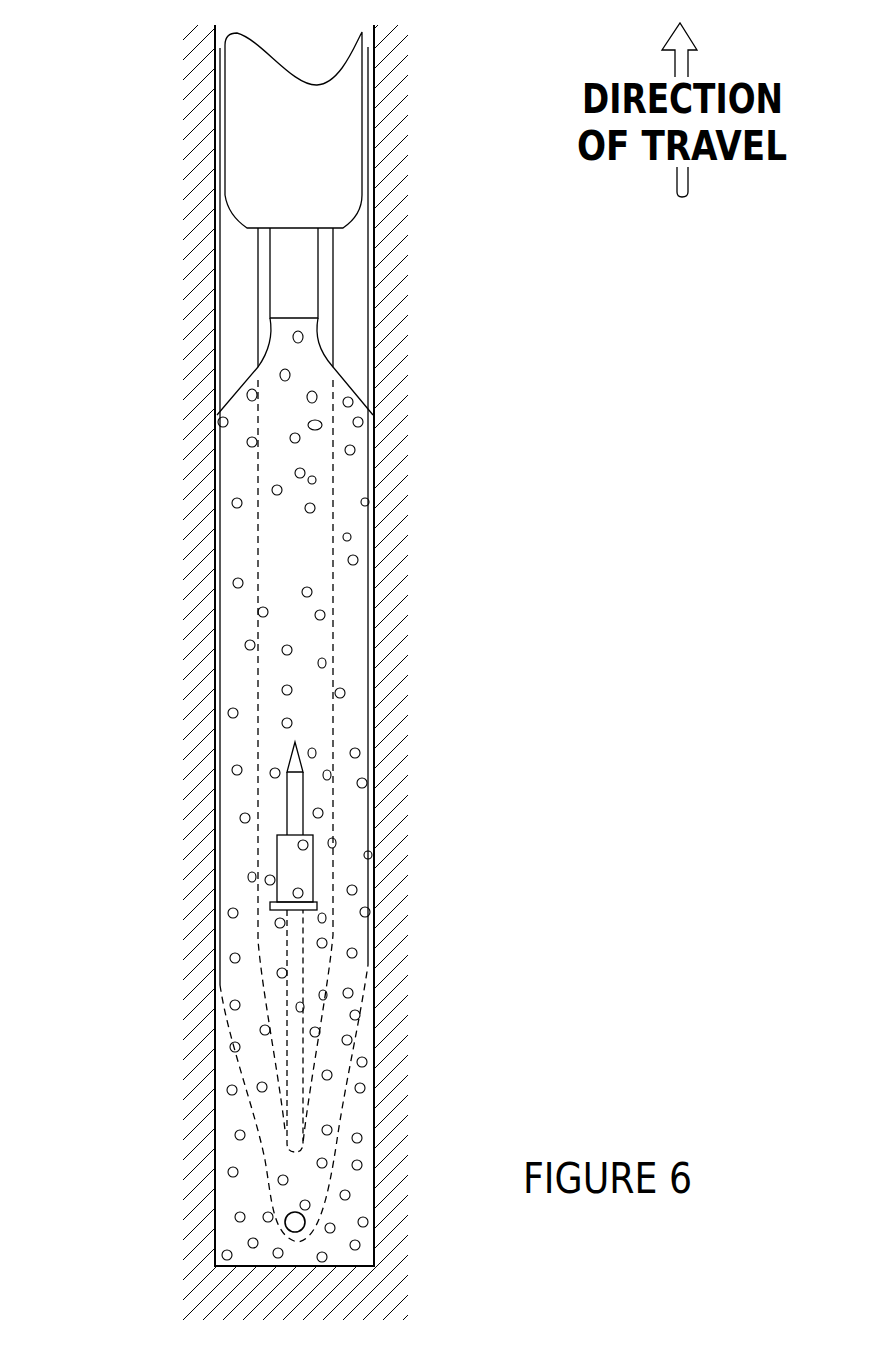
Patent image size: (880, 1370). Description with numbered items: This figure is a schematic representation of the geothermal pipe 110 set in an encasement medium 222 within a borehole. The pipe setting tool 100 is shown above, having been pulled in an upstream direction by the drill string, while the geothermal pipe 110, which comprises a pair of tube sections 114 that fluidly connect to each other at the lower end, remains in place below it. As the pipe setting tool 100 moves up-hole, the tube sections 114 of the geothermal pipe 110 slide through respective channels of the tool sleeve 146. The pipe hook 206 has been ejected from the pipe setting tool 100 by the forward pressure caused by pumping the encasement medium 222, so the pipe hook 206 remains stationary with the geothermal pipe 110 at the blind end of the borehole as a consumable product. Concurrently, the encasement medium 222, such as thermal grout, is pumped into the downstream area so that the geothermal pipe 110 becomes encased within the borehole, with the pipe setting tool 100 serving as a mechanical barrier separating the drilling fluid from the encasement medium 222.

The pipe setting tool 100 is at (205, 110).
The geothermal pipe 110 is at (355, 648).
The tube sections 114 is at (240, 320).
The tool sleeve 146 is at (347, 143).
The pipe hook 206 is at (295, 962).
The encasement medium 222 is at (319, 567).